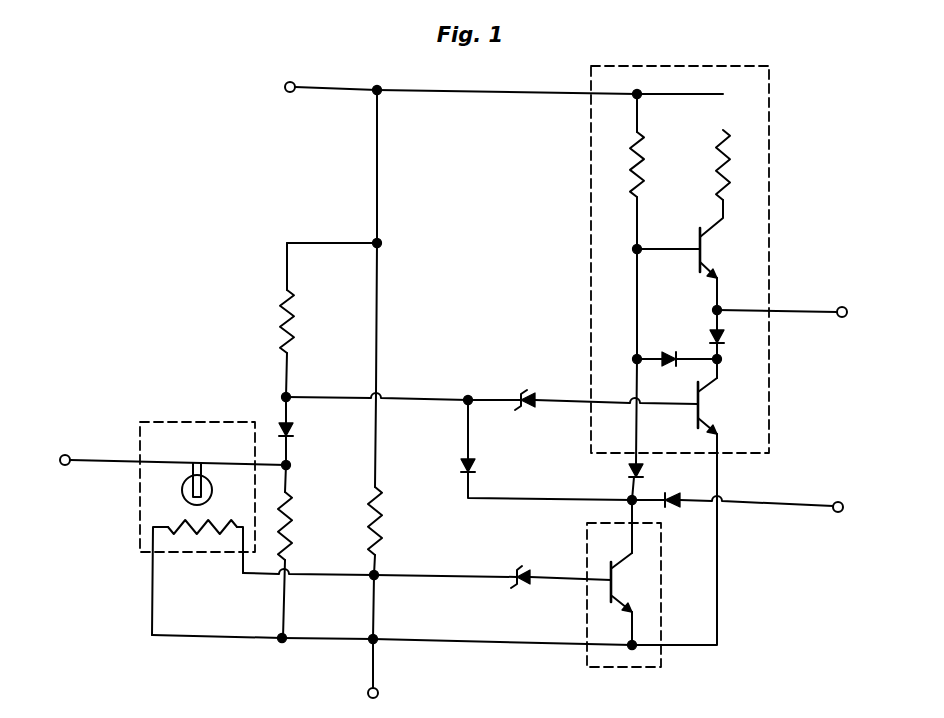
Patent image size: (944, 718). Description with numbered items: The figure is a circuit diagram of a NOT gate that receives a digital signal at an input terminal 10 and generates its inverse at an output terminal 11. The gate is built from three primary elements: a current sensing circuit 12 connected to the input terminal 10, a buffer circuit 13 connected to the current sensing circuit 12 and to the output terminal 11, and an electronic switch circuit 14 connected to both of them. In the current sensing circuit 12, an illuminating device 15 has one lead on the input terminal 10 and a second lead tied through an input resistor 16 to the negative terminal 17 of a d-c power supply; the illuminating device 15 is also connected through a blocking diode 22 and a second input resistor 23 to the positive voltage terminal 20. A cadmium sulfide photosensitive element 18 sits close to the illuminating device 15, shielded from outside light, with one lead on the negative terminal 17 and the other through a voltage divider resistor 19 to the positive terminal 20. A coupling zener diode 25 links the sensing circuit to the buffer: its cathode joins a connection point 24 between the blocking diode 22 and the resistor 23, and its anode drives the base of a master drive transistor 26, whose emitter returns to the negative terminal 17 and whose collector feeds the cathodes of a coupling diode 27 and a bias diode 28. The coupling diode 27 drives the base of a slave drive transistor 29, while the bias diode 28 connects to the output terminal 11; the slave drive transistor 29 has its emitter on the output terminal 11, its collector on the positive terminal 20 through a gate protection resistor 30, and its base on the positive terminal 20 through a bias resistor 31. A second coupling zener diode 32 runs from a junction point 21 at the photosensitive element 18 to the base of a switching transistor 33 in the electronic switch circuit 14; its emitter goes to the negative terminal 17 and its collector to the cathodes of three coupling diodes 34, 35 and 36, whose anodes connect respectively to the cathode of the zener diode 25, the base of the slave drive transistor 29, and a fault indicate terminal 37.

The input terminal 10 is at (67, 452).
The output terminal 11 is at (843, 307).
The current sensing circuit 12 is at (197, 421).
The buffer circuit 13 is at (769, 133).
The electronic switch circuit 14 is at (593, 669).
The illuminating device 15 is at (213, 489).
The input resistor 16 is at (292, 520).
The negative terminal 17 is at (366, 693).
The photosensitive element 18 is at (182, 522).
The voltage divider resistor 19 is at (382, 515).
The positive voltage terminal 20 is at (285, 87).
The junction point 21 is at (375, 582).
The blocking diode 22 is at (292, 428).
The second input resistor 23 is at (280, 308).
The connection point 24 is at (283, 394).
The coupling zener diode 25 is at (527, 388).
The master drive transistor 26 is at (708, 413).
The coupling diode 27 is at (667, 350).
The bias diode 28 is at (728, 338).
The slave drive transistor 29 is at (705, 235).
The gate protection resistor 30 is at (715, 150).
The bias resistor 31 is at (628, 148).
The second coupling zener diode 32 is at (520, 565).
The switching transistor 33 is at (621, 569).
The coupling diode 34 is at (470, 458).
The coupling diode 35 is at (617, 470).
The coupling diode 36 is at (682, 493).
The fault indicate terminal 37 is at (838, 501).